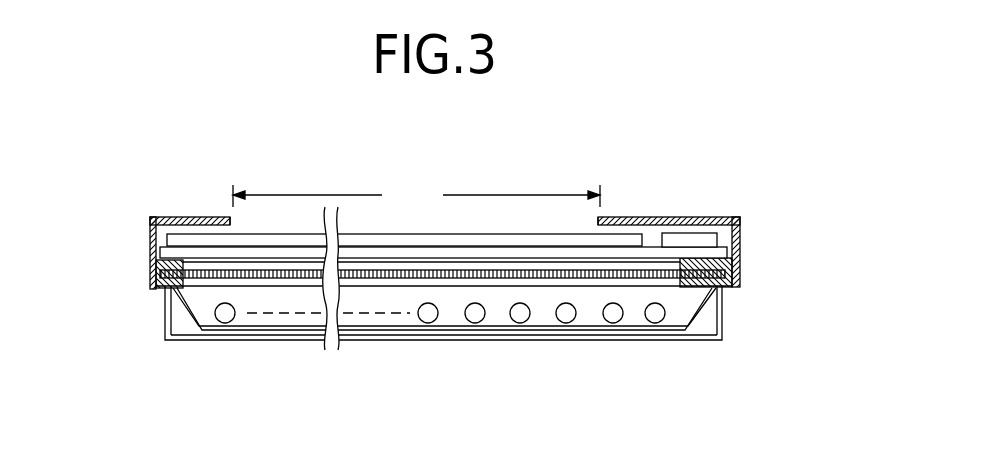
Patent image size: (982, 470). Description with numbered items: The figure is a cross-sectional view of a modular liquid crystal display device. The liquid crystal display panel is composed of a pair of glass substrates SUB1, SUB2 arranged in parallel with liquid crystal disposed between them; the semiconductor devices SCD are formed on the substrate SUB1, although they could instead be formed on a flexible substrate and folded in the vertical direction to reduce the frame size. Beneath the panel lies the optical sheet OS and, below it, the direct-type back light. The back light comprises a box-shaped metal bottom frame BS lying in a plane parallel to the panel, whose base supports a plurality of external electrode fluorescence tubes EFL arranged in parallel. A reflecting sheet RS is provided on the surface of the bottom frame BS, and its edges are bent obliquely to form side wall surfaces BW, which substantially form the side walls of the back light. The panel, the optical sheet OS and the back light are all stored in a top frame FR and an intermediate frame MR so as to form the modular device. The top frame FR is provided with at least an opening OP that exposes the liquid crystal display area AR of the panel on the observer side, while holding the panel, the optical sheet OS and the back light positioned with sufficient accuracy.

The top frame FR is at (742, 242).
The opening OP is at (597, 218).
The intermediate frame MR is at (743, 285).
The substrate SUB2 is at (190, 241).
The substrate SUB1 is at (197, 255).
The semiconductor device SCD is at (688, 240).
The optical sheet OS is at (285, 275).
The bottom frame BS is at (638, 340).
The side wall surface BW is at (187, 318).
The reflecting sheet RS is at (343, 323).
The external electrode fluorescence tube EFL is at (472, 318).
The liquid crystal display area AR is at (416, 196).